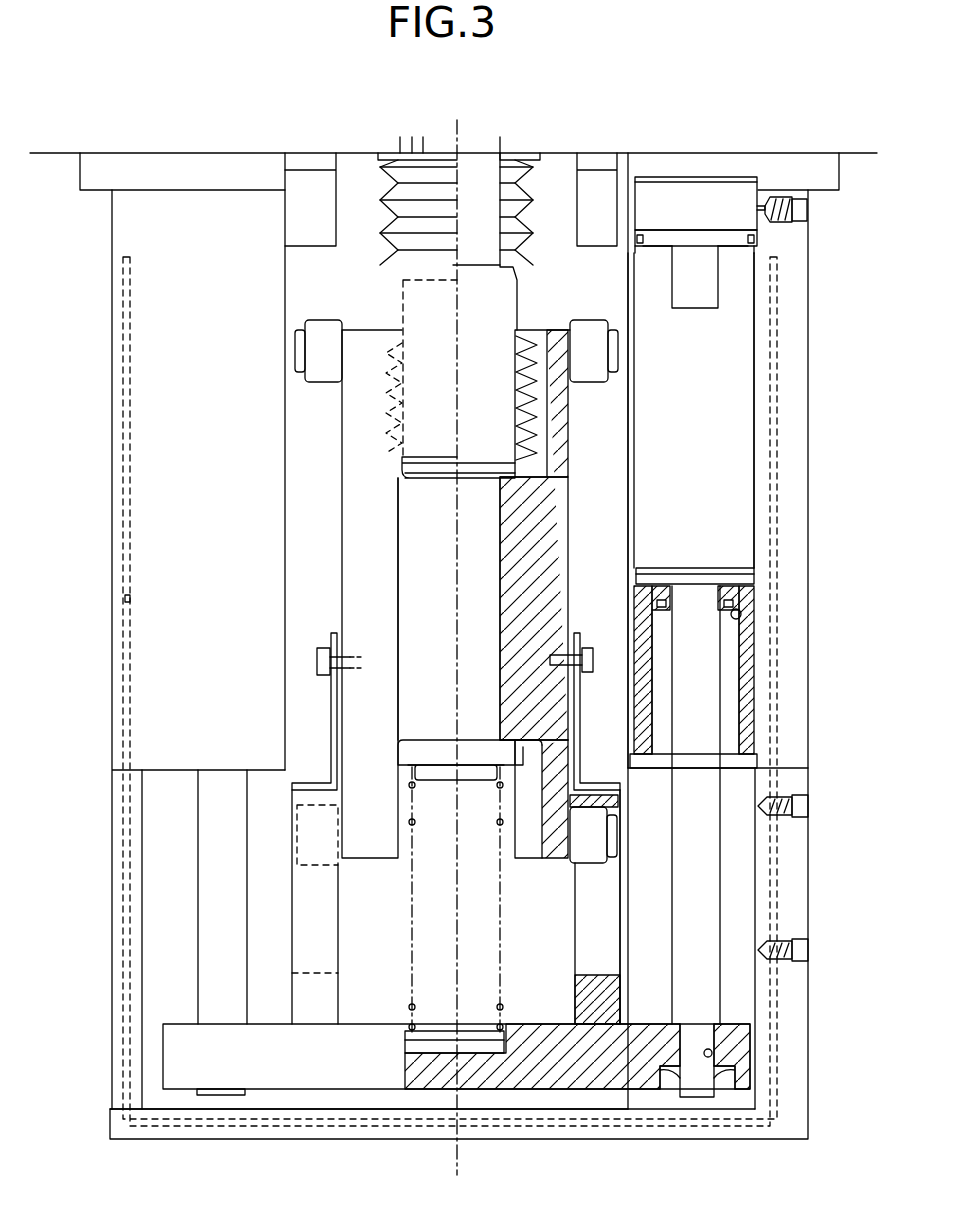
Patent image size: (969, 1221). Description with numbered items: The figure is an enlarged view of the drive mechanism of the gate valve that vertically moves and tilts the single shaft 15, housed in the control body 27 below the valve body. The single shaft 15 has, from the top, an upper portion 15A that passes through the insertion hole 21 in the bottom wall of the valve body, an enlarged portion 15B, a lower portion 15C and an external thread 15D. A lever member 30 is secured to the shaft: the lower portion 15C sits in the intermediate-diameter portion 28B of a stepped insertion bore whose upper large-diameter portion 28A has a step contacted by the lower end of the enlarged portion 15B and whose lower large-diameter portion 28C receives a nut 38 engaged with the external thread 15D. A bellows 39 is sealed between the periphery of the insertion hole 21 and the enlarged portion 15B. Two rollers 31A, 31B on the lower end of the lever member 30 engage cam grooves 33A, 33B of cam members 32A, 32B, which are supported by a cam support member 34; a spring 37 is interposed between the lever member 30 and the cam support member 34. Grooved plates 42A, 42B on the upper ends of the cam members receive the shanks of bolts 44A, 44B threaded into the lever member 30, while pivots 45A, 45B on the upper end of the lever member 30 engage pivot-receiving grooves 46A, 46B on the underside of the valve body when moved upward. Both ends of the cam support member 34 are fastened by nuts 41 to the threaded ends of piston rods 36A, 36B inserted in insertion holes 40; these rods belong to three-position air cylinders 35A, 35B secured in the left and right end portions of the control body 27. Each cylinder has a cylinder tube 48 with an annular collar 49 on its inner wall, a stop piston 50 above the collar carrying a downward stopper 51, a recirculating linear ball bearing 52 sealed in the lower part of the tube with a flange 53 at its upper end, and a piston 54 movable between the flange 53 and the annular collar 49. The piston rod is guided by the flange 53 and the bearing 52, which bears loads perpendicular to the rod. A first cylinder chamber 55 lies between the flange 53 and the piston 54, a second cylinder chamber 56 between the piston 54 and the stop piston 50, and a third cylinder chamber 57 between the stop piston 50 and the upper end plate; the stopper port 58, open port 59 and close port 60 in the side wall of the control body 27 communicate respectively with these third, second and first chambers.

The single shaft 15 is at (480, 323).
The upper portion 15A is at (480, 227).
The enlarged portion 15B is at (485, 440).
The lower portion 15C is at (480, 632).
The external thread 15D is at (475, 772).
The insertion hole 21 is at (513, 147).
The control body 27 is at (108, 1123).
The upper large-diameter portion 28A is at (542, 407).
The intermediate-diameter portion 28B is at (497, 560).
The lower large-diameter portion 28C is at (535, 847).
The lever member 30 is at (340, 575).
The roller 31A is at (340, 868).
The roller 31B is at (593, 845).
The cam member 32A is at (287, 942).
The cam member 32B is at (626, 926).
The cam groove 33A is at (310, 937).
The cam groove 33B is at (586, 938).
The cam support member 34 is at (562, 1060).
The three-position air cylinder 35A is at (158, 527).
The three-position air cylinder 35B is at (730, 491).
The piston rod 36A is at (207, 862).
The piston rod 36B is at (706, 879).
The spring 37 is at (415, 823).
The nut 38 is at (415, 753).
The bellows 39 is at (385, 245).
The insertion hole 40 is at (712, 1053).
The nut 41 is at (672, 1082).
The grooved plate 42A is at (332, 707).
The grooved plate 42B is at (600, 745).
The bolt 44A is at (320, 652).
The bolt 44B is at (590, 652).
The pivot 45A is at (312, 382).
The pivot 45B is at (592, 317).
The pivot-receiving groove 46A is at (307, 210).
The pivot-receiving groove 46B is at (608, 215).
The cylinder tube 48 is at (628, 480).
The annular collar 49 is at (638, 253).
The stop piston 50 is at (730, 240).
The stopper 51 is at (708, 308).
The recirculating linear ball bearing 52 is at (752, 686).
The flange 53 is at (740, 616).
The piston 54 is at (677, 564).
The first cylinder chamber 55 is at (746, 591).
The second cylinder chamber 56 is at (729, 418).
The third cylinder chamber 57 is at (727, 192).
The stopper port 58 is at (800, 203).
The open port 59 is at (800, 806).
The close port 60 is at (800, 946).